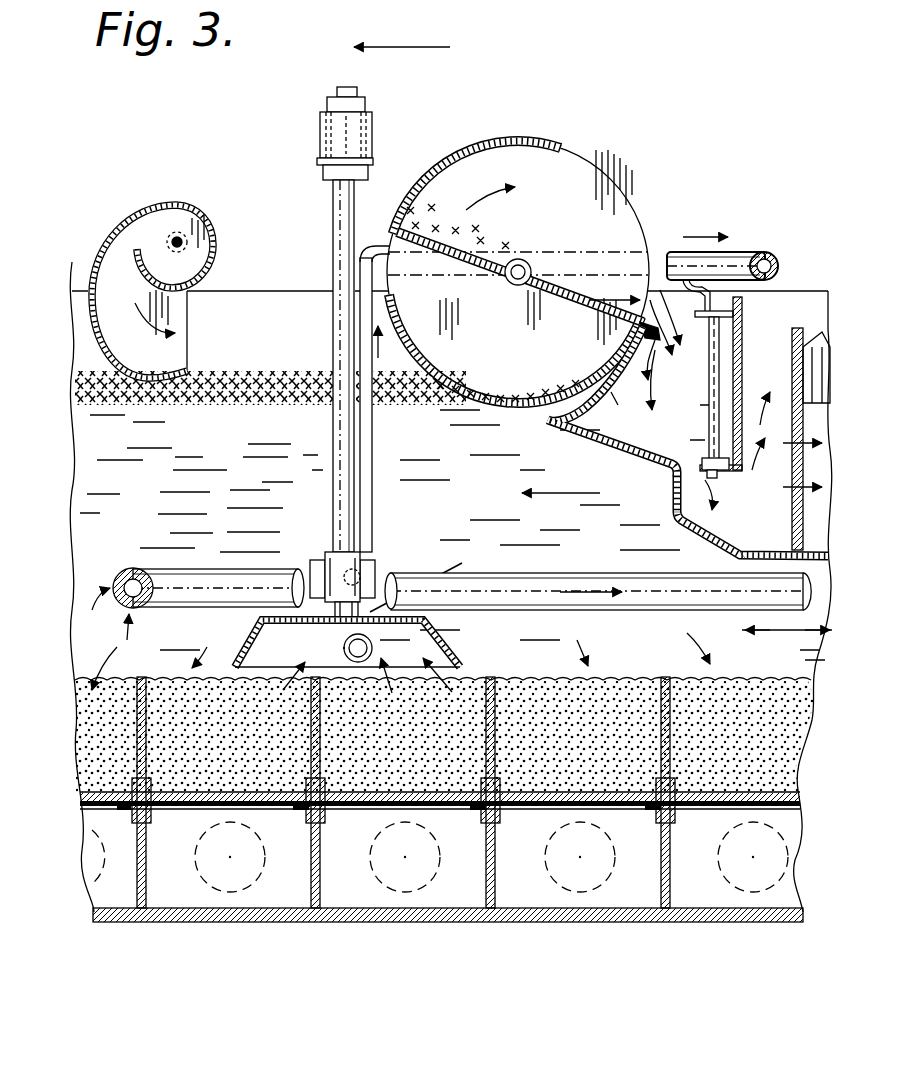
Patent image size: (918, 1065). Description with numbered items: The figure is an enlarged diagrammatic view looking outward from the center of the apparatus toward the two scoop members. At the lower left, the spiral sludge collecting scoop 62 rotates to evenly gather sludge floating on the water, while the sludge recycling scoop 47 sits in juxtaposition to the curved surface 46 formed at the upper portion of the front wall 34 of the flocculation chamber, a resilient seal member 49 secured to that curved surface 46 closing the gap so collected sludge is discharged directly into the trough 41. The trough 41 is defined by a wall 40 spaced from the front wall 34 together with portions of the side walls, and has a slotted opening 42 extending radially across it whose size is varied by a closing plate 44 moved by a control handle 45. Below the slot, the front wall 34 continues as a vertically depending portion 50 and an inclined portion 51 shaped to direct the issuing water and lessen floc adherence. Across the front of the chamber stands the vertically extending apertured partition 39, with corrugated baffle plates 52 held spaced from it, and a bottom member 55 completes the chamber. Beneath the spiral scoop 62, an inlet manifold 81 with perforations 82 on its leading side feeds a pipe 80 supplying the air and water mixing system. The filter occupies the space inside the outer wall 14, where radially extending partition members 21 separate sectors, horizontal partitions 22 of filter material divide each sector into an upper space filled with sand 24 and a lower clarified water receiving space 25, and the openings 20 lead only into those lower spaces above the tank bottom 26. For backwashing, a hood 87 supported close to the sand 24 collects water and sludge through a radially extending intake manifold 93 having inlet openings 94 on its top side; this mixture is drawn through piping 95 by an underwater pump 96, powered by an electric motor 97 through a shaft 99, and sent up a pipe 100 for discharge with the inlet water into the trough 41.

The wall 14 is at (72, 291).
The openings 20 is at (248, 878).
The partition members 21 is at (147, 738).
The horizontally extending partitions 22 is at (270, 792).
The sand 24 is at (250, 766).
The clarified water receiving spaces 25 is at (180, 857).
The tank bottom 26 is at (186, 922).
The front wall 34 is at (616, 452).
The apertured partition 39 is at (800, 328).
The wall 40 is at (745, 392).
The trough 41 is at (698, 418).
The slotted opening 42 is at (672, 483).
The closing plate 44 is at (710, 458).
The control handle 45 is at (707, 293).
The curved surface 46 is at (624, 412).
The sludge recycling scoop 47 is at (522, 140).
The seal member 49 is at (650, 295).
The vertically depending portion 50 is at (674, 506).
The inclined portion 51 is at (720, 548).
The corrugated baffle plates 52 is at (826, 338).
The bottom member 55 is at (827, 570).
The spiral sludge collecting scoop 62 is at (157, 194).
The pipe 80 is at (641, 612).
The inlet manifold 81 is at (126, 567).
The perforations 82 is at (114, 583).
The hood 87 is at (447, 644).
The intake manifold 93 is at (344, 648).
The inlet openings 94 is at (372, 650).
The piping 95 is at (433, 576).
The underwater pump 96 is at (376, 566).
The electric motor 97 is at (374, 132).
The shaft 99 is at (333, 220).
The pipe 100 is at (356, 500).